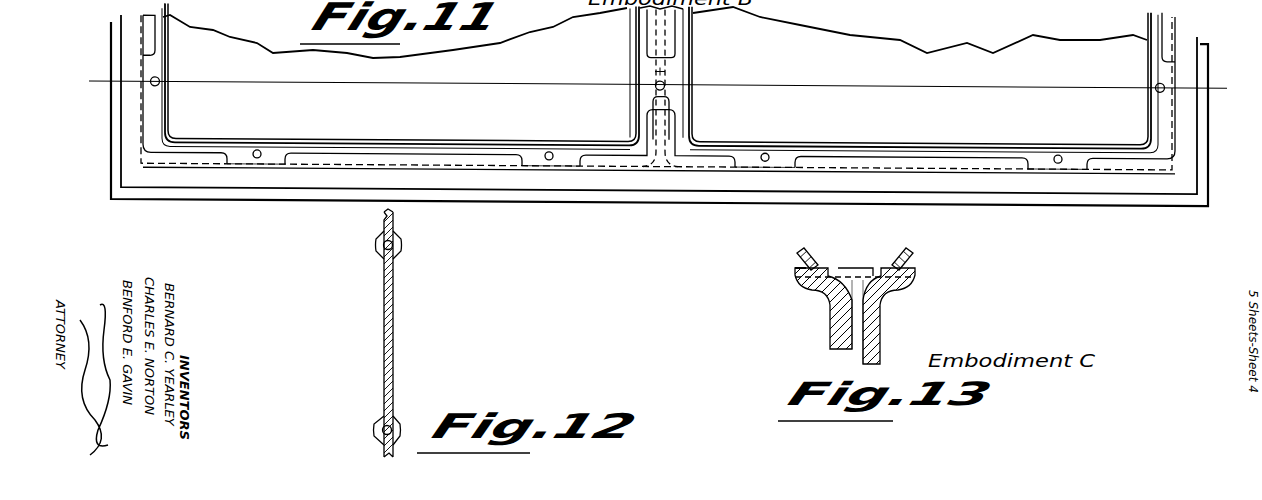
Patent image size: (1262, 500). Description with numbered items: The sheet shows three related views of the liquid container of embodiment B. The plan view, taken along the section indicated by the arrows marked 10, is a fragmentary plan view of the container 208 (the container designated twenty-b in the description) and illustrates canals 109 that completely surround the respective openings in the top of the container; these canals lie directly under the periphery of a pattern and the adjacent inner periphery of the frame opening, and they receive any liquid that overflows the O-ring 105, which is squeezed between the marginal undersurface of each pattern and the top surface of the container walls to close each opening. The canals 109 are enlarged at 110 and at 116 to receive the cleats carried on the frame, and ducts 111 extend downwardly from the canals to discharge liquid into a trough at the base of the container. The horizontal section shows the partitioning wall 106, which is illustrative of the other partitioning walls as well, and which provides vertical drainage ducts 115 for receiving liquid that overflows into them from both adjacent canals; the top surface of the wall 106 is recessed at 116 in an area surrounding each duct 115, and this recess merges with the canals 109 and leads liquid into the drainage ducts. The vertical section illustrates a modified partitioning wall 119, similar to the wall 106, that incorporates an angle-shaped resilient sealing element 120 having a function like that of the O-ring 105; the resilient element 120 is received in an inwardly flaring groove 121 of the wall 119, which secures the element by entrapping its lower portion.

In FIG. 11, the section line 10 is at (89, 81).
In FIG. 11, the O-ring 105 is at (634, 58).
In FIG. 11, the partitioning wall 106 is at (663, 68).
In FIG. 12, the partitioning wall 106 is at (395, 324).
In FIG. 11, the canals 109 is at (642, 22).
In FIG. 13, the canals 109 is at (877, 268).
In FIG. 11, the canal enlargement 110 is at (273, 163).
In FIG. 11, the ducts 111 is at (255, 157).
In FIG. 11, the vertical drainage ducts 115 is at (665, 81).
In FIG. 12, the vertical drainage ducts 115 is at (401, 239).
In FIG. 13, the vertical drainage ducts 115 is at (856, 313).
In FIG. 11, the recess 116 is at (652, 93).
In FIG. 13, the partitioning wall 119 is at (879, 334).
In FIG. 13, the angle-shaped resilient sealing element 120 is at (814, 256).
In FIG. 13, the inwardly flaring groove 121 is at (804, 268).
In FIG. 11, the casing 208 is at (1219, 116).